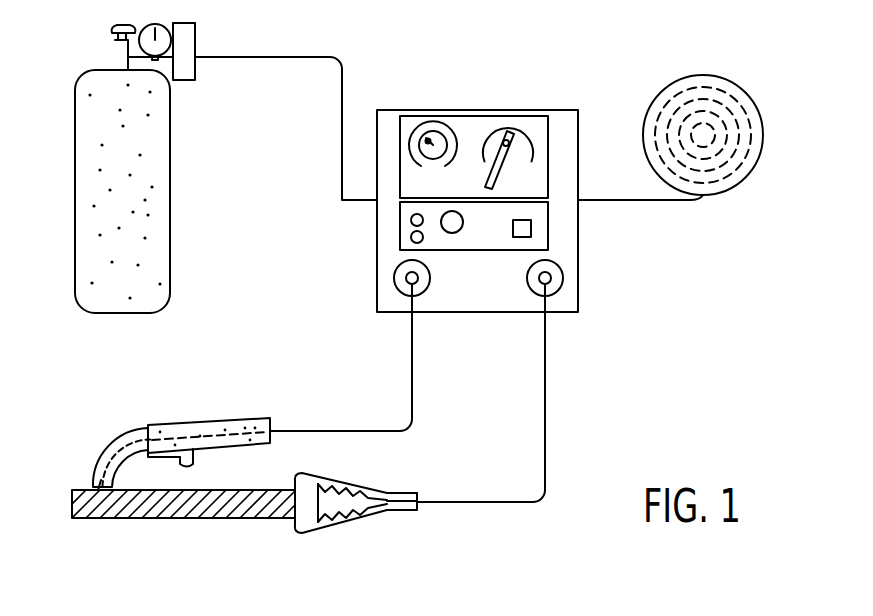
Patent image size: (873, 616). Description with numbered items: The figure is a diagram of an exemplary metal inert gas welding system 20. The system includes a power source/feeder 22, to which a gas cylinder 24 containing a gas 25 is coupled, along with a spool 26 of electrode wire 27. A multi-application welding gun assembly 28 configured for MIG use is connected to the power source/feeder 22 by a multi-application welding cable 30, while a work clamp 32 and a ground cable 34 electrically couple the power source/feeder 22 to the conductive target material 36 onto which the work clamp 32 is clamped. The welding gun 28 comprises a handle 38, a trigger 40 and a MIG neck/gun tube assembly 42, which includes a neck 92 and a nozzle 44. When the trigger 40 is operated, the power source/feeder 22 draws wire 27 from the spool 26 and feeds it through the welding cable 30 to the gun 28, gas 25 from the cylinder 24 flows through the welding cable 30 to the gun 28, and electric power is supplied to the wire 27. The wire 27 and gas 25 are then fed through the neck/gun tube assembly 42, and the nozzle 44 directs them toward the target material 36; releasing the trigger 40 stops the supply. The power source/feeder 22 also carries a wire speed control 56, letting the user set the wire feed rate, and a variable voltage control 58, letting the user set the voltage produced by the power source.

The MIG welding system 20 is at (503, 36).
The power source/feeder 22 is at (567, 110).
The gas cylinder 24 is at (75, 137).
The gas 25 is at (133, 277).
The spool 26 is at (758, 158).
The electrode wire 27 is at (724, 100).
The multi-application welding gun assembly 28 is at (245, 413).
The multi-application welding cable 30 is at (412, 374).
The work clamp 32 is at (358, 483).
The ground cable 34 is at (546, 374).
The target material 36 is at (218, 507).
The handle 38 is at (232, 452).
The trigger 40 is at (185, 466).
The MIG neck/gun tube assembly 42 is at (117, 440).
The nozzle 44 is at (93, 483).
The wire speed control 56 is at (417, 129).
The variable voltage control 58 is at (533, 147).
The neck 92 is at (105, 452).